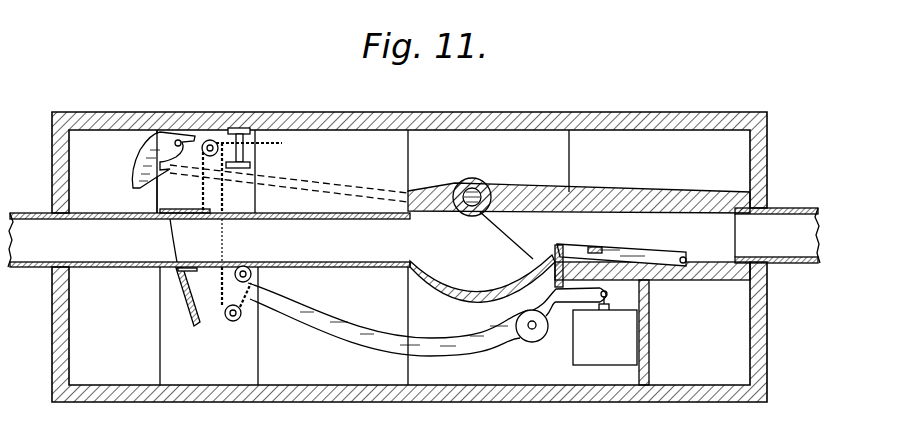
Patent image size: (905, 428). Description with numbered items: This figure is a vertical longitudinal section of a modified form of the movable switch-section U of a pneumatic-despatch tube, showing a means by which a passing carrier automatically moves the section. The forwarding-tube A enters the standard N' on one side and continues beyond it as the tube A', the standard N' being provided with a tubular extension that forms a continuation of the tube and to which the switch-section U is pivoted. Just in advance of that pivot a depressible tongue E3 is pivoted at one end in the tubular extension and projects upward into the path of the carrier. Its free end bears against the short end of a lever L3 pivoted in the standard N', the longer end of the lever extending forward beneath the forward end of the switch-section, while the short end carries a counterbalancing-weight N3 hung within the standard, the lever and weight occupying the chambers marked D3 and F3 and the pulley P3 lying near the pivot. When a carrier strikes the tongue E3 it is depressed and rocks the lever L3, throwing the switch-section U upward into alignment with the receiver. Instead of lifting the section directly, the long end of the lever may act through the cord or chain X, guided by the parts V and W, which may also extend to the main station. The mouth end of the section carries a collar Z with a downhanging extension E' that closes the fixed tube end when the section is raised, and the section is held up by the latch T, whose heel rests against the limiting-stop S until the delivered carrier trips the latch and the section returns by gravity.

The forwarding-tube A is at (209, 240).
The pipe continuation A' is at (777, 235).
The limiting-stop S is at (177, 112).
The pulley V is at (211, 146).
The latch T is at (145, 153).
The collar Z is at (363, 257).
The bracket W is at (250, 148).
The cord or chain X is at (251, 155).
The movable switch-section U is at (460, 212).
The downhanging extension E' is at (185, 276).
The pulley P3 is at (252, 275).
The lever L3 is at (540, 345).
The standard N' is at (482, 312).
The counterbalancing-weight N3 is at (605, 328).
The chamber D3 is at (650, 283).
The lever F3 is at (688, 250).
The depressible tongue E3 is at (594, 241).